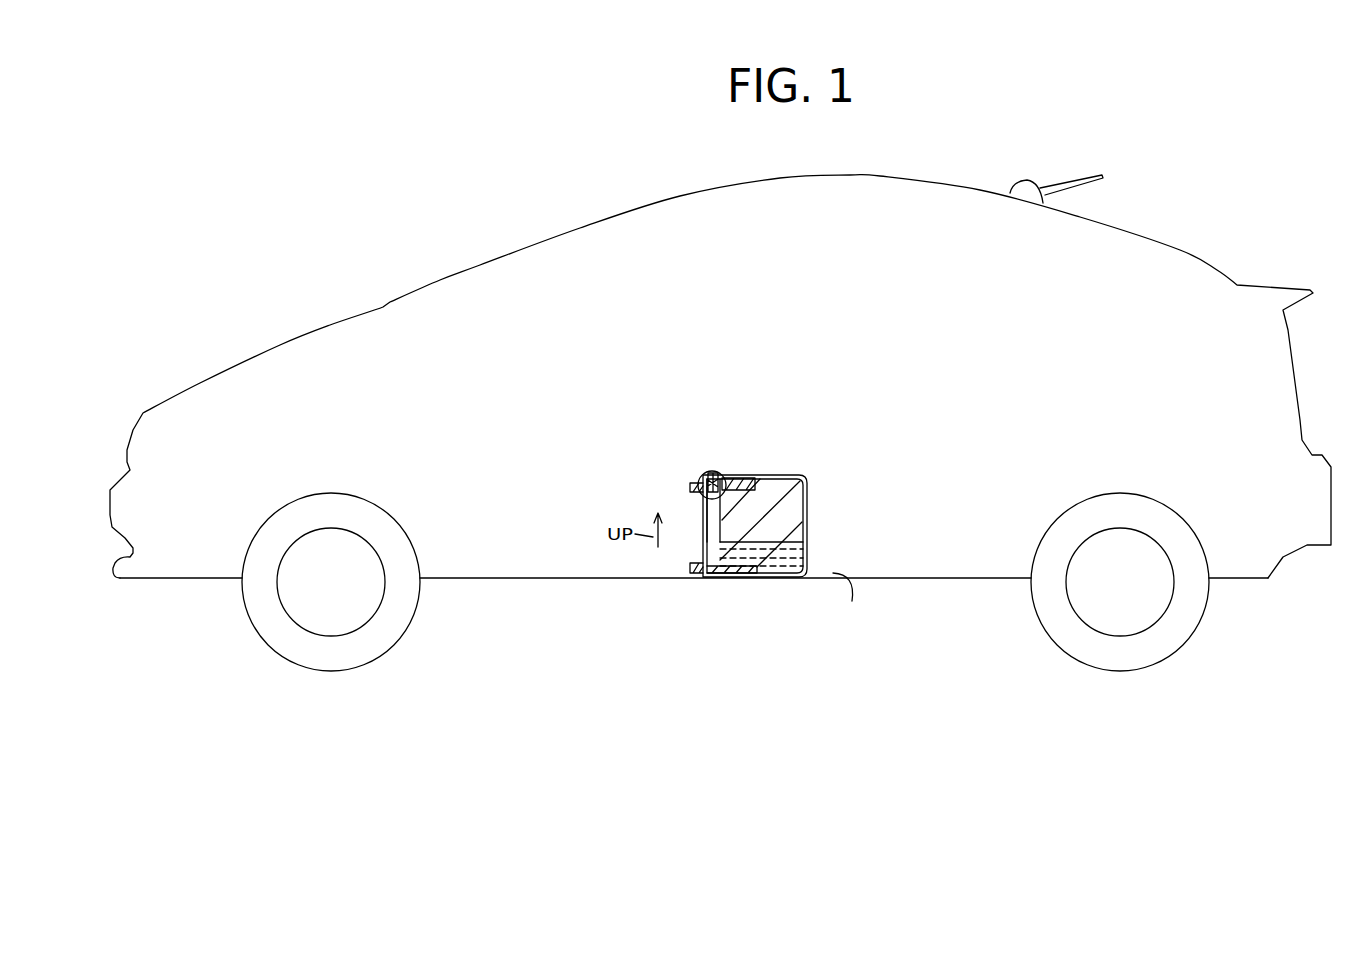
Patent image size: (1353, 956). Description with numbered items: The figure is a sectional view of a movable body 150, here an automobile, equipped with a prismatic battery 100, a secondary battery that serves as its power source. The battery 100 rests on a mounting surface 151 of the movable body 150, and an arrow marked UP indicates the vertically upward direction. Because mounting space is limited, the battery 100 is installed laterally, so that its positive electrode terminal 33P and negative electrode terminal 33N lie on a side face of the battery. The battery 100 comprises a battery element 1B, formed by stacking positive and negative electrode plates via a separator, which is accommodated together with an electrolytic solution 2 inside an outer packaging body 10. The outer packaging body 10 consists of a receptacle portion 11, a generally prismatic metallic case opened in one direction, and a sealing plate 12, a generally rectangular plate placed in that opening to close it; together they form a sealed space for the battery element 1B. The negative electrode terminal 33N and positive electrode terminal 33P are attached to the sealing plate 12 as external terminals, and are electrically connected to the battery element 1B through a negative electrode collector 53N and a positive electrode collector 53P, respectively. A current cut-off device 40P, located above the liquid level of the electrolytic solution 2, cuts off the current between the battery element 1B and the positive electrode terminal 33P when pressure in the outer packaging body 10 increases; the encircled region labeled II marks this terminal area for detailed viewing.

The movable body 150 is at (1197, 226).
The mounting surface 151 is at (853, 600).
The prismatic battery 100 is at (739, 550).
The outer packaging body 10 is at (749, 582).
The receptacle portion 11 is at (766, 580).
The sealing plate 12 is at (777, 652).
The battery element 1B is at (770, 519).
The electrolytic solution 2 is at (717, 538).
The positive electrode collector 53P is at (752, 475).
The negative electrode collector 53N is at (733, 571).
The positive electrode terminal 33P is at (692, 488).
The negative electrode terminal 33N is at (691, 568).
The current cut-off device 40P is at (713, 470).
The section II is at (700, 472).